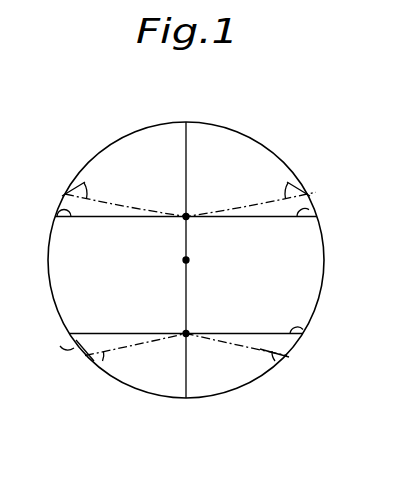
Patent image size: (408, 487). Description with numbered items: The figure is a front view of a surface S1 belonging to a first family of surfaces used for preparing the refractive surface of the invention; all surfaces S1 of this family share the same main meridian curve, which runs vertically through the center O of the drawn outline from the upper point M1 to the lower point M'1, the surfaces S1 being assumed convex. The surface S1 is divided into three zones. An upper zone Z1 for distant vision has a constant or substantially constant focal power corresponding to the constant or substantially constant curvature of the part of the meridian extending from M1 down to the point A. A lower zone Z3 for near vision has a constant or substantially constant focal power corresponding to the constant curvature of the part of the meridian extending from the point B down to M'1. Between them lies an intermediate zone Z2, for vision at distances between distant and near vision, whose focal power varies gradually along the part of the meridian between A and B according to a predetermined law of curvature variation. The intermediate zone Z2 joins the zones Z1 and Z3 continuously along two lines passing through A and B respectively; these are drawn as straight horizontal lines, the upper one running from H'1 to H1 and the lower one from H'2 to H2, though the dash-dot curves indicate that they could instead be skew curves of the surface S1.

The surface of the first family of surfaces S1 is at (86, 162).
The upper end point of the main meridian curve M1 is at (184, 158).
The lower end point of the main meridian curve M'1 is at (180, 385).
The center of sphere O is at (176, 275).
The point A of the main meridian curve A is at (180, 222).
The point B of the main meridian curve B is at (186, 347).
The upper zone for distant vision Z1 is at (256, 180).
The intermediate zone Z2 is at (297, 283).
The lower zone for near vision Z3 is at (243, 377).
The end point of line H1' H1 is at (320, 214).
The end point of line H1'H1 H'1 is at (50, 211).
The end point of line H2' H2 is at (310, 340).
The end point of line H2'H2 H'2 is at (54, 338).